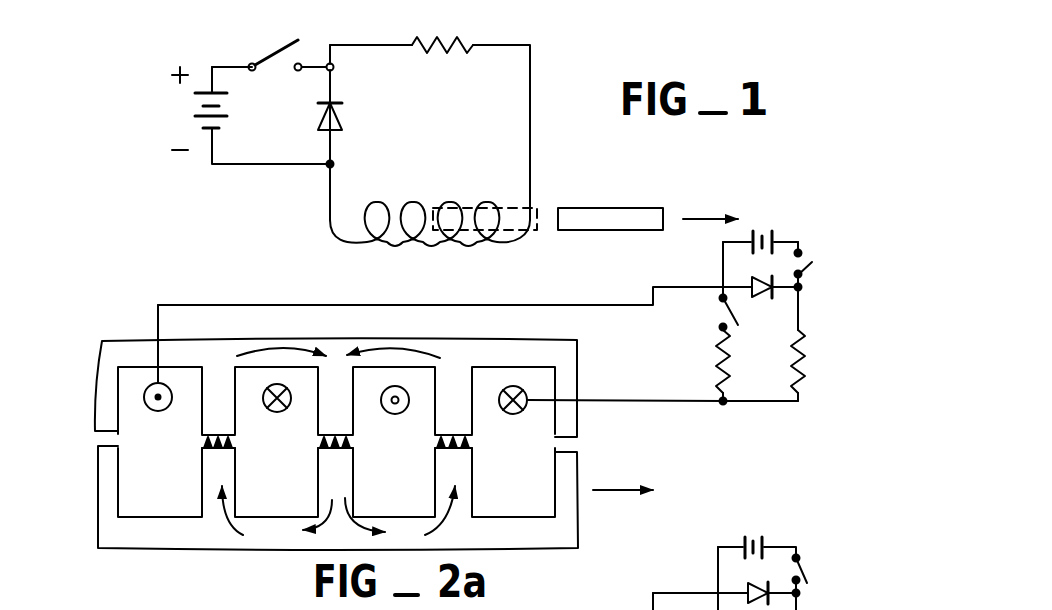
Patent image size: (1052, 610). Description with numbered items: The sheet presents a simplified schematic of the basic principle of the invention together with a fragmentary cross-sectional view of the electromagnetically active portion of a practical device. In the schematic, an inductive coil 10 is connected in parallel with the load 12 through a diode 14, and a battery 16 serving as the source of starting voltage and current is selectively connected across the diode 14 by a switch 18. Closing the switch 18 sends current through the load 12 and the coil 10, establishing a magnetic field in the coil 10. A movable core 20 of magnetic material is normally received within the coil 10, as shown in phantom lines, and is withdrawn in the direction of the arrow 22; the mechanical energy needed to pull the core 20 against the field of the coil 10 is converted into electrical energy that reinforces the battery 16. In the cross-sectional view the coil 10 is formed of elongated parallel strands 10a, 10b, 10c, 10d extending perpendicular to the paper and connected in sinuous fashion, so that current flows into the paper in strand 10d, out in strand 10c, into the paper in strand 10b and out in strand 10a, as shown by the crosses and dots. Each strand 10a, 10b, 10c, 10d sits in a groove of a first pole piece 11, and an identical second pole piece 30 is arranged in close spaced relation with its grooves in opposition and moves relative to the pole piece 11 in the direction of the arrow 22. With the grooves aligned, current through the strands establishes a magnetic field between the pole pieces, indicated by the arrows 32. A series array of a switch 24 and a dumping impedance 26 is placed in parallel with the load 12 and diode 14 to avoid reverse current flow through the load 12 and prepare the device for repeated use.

In FIG. 1, the inductive coil 10 is at (330, 240).
In FIG. 2a, the strand 10a is at (158, 411).
In FIG. 2a, the strand 10b is at (277, 412).
In FIG. 2a, the strand 10c is at (395, 414).
In FIG. 2a, the strand 10d is at (513, 414).
In FIG. 2a, the first pole piece 11 is at (100, 340).
In FIG. 1, the load 12 is at (448, 53).
In FIG. 2a, the load 12 is at (807, 355).
In FIG. 1, the diode 14 is at (340, 127).
In FIG. 2a, the diode 14 is at (767, 298).
In FIG. 1, the battery 16 is at (190, 112).
In FIG. 2a, the battery 16 is at (765, 231).
In FIG. 1, the switch 18 is at (268, 56).
In FIG. 2a, the switch 18 is at (812, 262).
In FIG. 1, the movable core 20 is at (618, 208).
In FIG. 1, the arrow 22 is at (705, 217).
In FIG. 2a, the arrow 22 is at (619, 488).
In FIG. 2a, the switch 24 is at (720, 312).
In FIG. 2a, the dumping impedance 26 is at (717, 348).
In FIG. 2a, the second pole piece 30 is at (336, 460).
In FIG. 2a, the arrows 32 is at (220, 437).